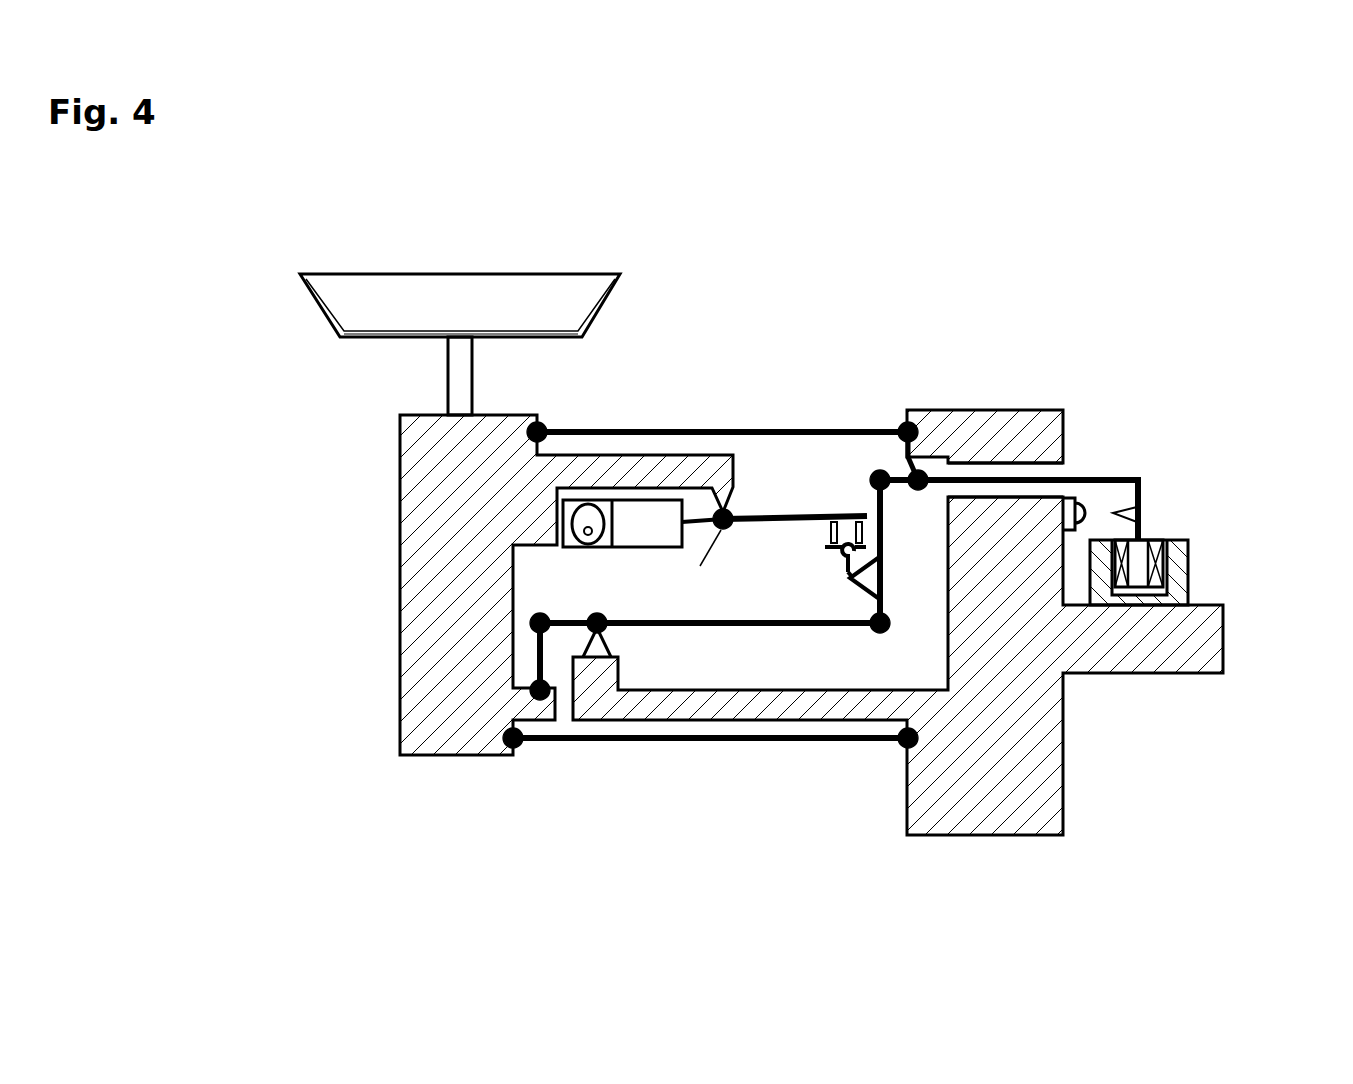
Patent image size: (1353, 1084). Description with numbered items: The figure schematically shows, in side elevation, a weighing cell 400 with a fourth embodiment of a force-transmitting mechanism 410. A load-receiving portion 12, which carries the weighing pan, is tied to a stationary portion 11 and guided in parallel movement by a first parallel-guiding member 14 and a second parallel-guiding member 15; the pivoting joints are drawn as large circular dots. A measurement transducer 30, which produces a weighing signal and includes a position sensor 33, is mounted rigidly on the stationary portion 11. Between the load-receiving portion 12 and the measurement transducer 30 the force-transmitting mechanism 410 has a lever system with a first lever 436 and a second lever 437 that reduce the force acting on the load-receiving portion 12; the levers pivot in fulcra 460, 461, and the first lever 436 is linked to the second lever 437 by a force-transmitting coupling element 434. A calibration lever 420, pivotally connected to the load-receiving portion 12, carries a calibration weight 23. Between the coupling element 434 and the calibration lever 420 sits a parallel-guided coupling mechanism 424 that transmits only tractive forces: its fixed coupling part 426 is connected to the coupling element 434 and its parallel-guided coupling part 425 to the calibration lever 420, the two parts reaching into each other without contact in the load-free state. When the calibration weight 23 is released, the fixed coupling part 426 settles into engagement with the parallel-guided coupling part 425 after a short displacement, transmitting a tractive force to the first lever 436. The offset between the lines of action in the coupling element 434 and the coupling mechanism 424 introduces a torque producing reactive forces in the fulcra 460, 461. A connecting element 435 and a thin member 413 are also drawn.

The stationary portion 11 is at (898, 622).
The load-receiving portion 12 is at (566, 585).
The first parallel-guiding member 14 is at (643, 428).
The second parallel-guiding member 15 is at (655, 742).
The calibration weight 23 is at (622, 523).
The measurement transducer 30 is at (1207, 570).
The position sensor 33 is at (1153, 502).
The weighing cell 400 is at (1058, 362).
The force-transmitting mechanism 410 is at (687, 647).
The spring 413 is at (493, 560).
The calibration lever 420 is at (775, 516).
The parallel-guided coupling mechanism 424 is at (822, 401).
The parallel-guided coupling part 425 is at (859, 518).
The fixed coupling part 426 is at (846, 572).
The force-transmitting coupling element 434 is at (872, 578).
The push rod 435 is at (1055, 473).
The first lever 436 is at (740, 627).
The second lever 437 is at (1090, 478).
The fulcrum 460 is at (593, 627).
The fulcrum 461 is at (915, 465).